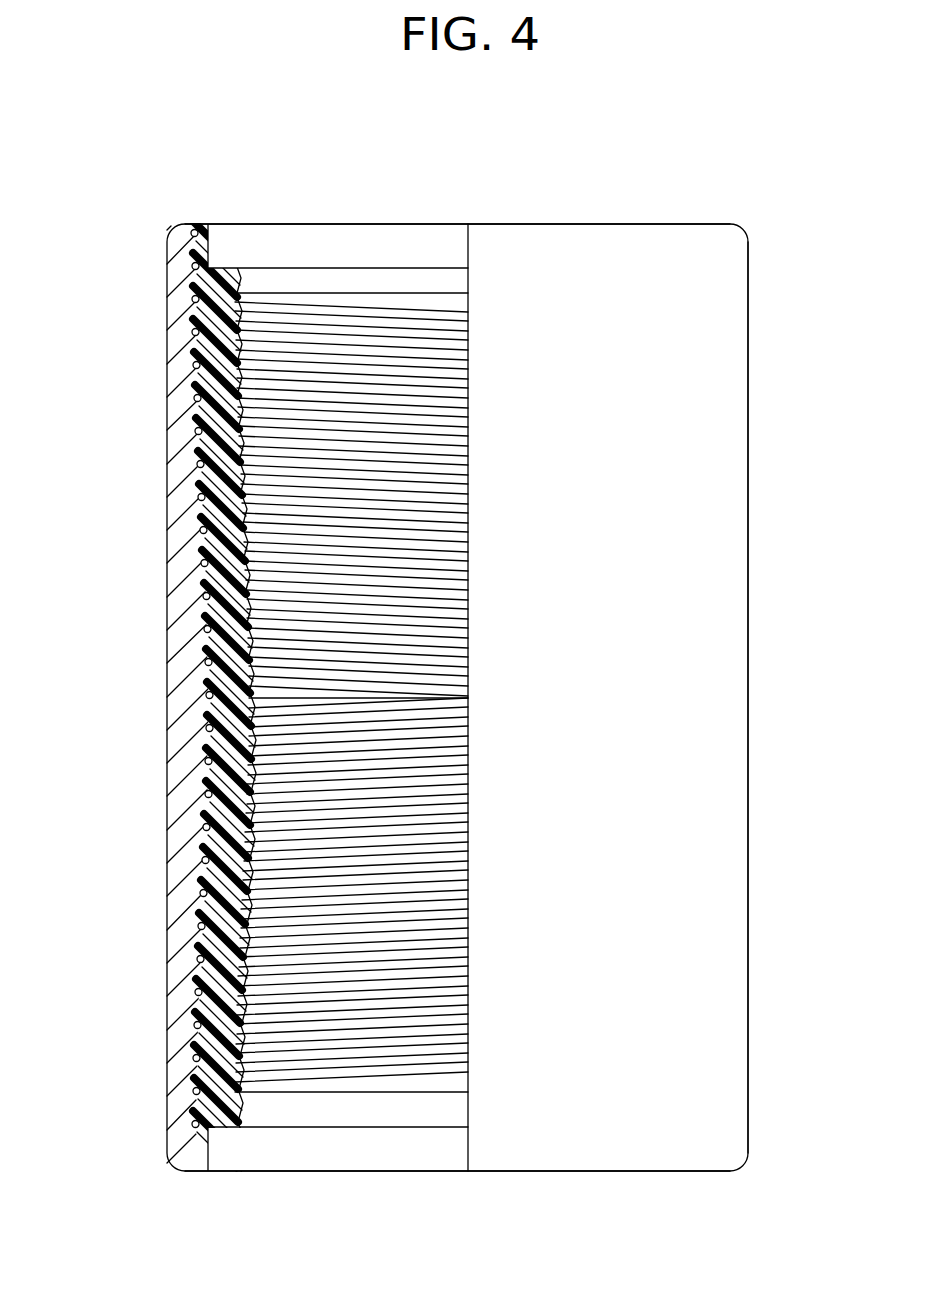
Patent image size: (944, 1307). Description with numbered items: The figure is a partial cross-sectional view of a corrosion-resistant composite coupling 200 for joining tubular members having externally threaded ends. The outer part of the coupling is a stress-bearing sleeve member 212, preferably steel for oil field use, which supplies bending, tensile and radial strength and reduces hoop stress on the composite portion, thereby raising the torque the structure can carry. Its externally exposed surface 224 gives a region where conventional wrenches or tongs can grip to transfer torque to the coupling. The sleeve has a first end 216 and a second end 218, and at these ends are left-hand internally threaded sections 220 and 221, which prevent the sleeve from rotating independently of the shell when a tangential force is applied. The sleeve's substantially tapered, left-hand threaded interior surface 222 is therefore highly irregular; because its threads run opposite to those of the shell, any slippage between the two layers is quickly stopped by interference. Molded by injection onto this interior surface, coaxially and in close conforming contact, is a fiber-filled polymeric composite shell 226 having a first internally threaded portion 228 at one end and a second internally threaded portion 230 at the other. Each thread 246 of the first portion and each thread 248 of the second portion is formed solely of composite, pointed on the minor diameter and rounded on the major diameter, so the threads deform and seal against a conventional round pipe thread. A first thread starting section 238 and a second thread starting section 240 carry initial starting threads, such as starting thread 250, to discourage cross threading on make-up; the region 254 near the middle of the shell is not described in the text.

The corrosion-resistant composite coupling 200 is at (760, 363).
The stress-bearing sleeve member 212 is at (167, 603).
The first end 216 is at (750, 270).
The second end 218 is at (750, 1090).
The left-hand internally threaded section 220 is at (200, 480).
The left-hand internally threaded section 221 is at (193, 962).
The interior surface 222 is at (192, 349).
The externally exposed surface 224 is at (625, 658).
The fiber-filled polymeric composite shell 226 is at (194, 266).
The first internally threaded portion 228 is at (448, 428).
The second internally threaded portion 230 is at (448, 920).
The first thread starting section 238 is at (230, 273).
The second thread starting section 240 is at (225, 1110).
The thread 246 is at (195, 397).
The thread 248 is at (200, 1020).
The initial starting thread 250 is at (460, 298).
The winding crossover 254 is at (213, 691).